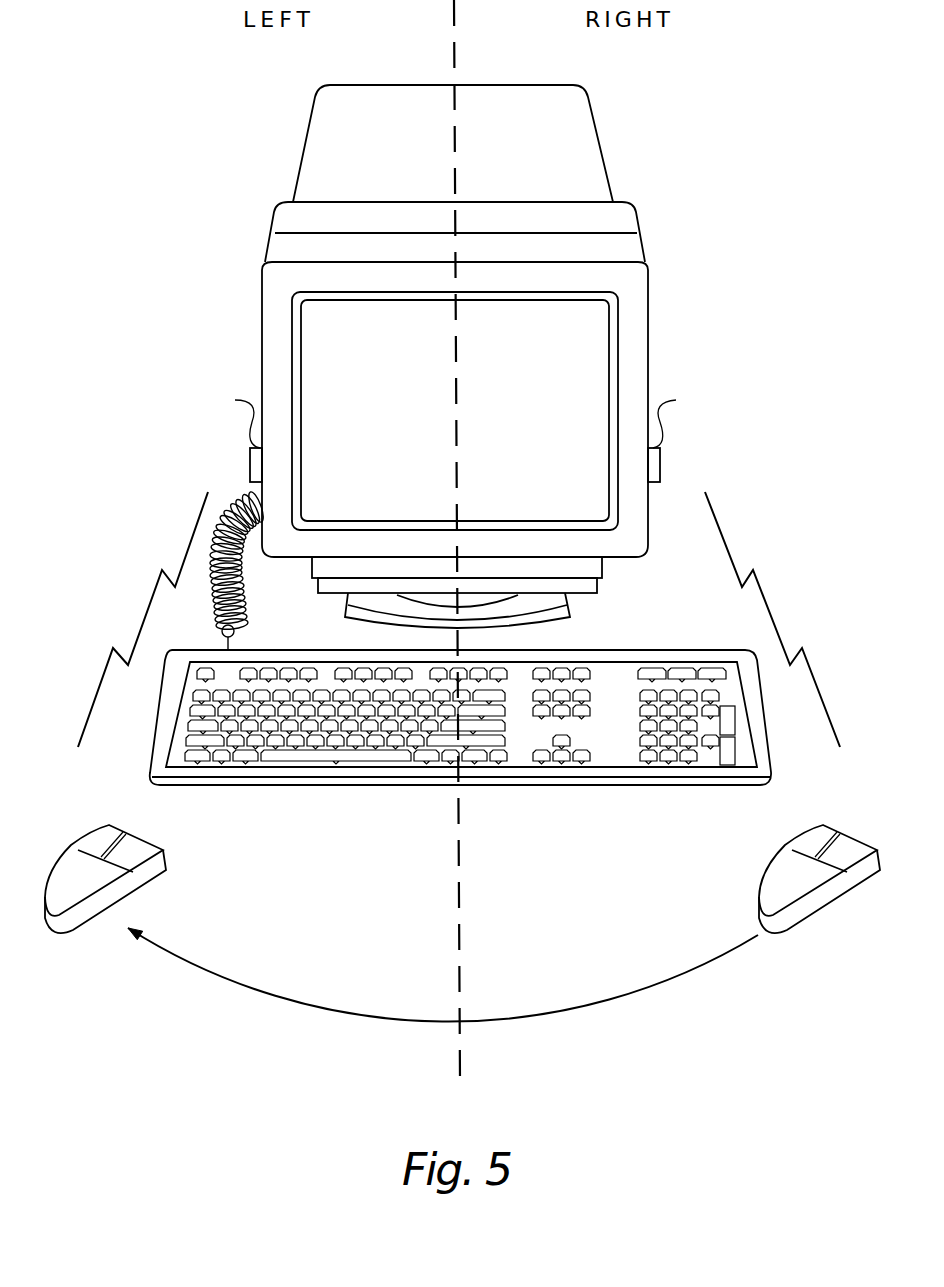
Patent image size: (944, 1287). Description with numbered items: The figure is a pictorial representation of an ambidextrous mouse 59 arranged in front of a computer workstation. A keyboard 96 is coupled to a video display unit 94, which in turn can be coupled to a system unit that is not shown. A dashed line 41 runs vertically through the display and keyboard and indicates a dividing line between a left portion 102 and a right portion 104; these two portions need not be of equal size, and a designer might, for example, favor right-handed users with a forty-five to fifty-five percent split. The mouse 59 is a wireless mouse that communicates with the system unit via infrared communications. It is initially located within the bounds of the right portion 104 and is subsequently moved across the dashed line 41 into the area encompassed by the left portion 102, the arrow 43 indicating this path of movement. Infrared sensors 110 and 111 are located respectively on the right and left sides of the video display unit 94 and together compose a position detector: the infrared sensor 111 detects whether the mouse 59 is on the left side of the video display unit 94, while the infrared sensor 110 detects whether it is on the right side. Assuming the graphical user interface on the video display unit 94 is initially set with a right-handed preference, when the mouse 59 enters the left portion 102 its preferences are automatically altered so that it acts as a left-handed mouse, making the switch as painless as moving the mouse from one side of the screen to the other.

The dashed line 41 is at (460, 843).
The arrow 43 is at (642, 992).
The ambidextrous mouse 59 is at (85, 918).
The video display unit 94 is at (652, 318).
The keyboard 96 is at (697, 787).
The left portion 102 is at (150, 240).
The right portion 104 is at (760, 240).
The infrared sensor 110 is at (663, 464).
The infrared sensor 111 is at (252, 464).